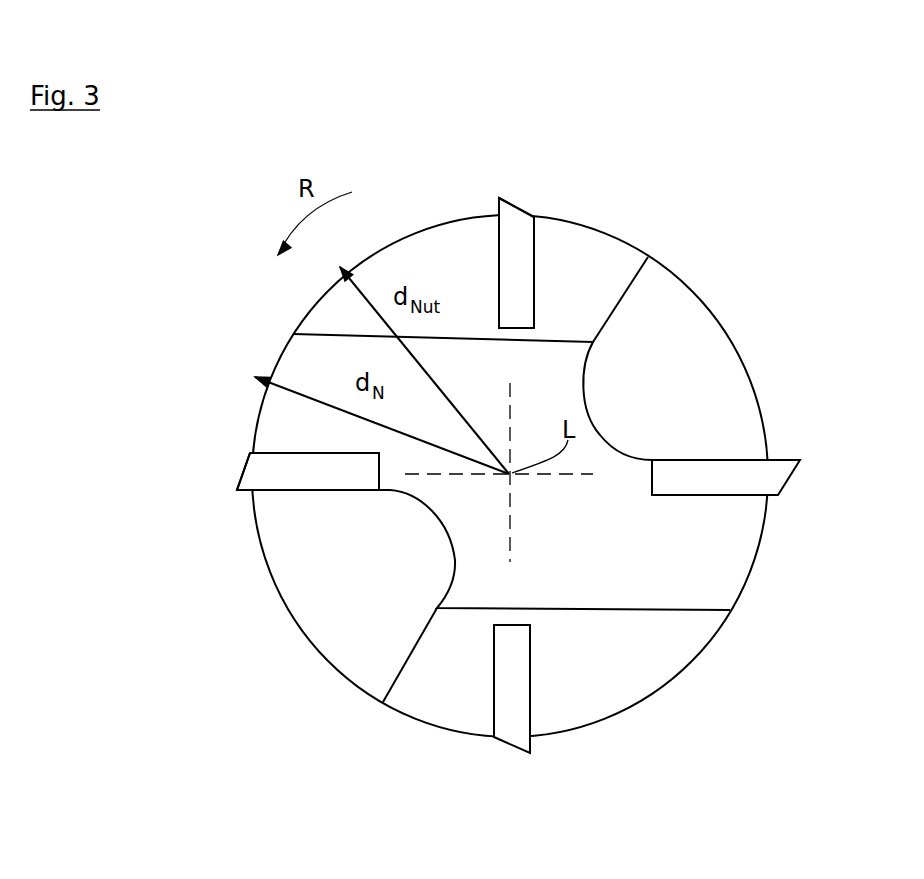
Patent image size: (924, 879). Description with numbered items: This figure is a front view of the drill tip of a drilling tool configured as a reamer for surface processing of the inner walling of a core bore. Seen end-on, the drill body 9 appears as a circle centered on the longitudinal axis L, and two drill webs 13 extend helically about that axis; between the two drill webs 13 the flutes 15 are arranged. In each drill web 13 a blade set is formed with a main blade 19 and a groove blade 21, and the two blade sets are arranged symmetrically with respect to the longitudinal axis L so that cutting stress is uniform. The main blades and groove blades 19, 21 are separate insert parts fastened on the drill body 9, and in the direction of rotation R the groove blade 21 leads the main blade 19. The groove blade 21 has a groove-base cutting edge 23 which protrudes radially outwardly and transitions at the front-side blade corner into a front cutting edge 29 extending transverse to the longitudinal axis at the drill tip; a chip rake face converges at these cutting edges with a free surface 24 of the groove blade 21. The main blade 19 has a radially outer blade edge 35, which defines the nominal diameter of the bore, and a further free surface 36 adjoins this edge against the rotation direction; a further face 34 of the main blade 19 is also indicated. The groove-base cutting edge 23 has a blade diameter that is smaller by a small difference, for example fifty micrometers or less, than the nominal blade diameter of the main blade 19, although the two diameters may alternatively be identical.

The drill body 9 is at (638, 245).
The drill web 13 is at (580, 240).
The flute 15 is at (687, 378).
The main blade 19 is at (800, 478).
The groove blade 21 is at (562, 80).
The groove-base cutting edge 23 is at (499, 198).
The free surface 24 is at (516, 207).
The front cutting edge 29 is at (478, 240).
The tooth bottom face 34 is at (272, 492).
The radially outer blade edge 35 is at (238, 490).
The free surface 36 is at (247, 462).